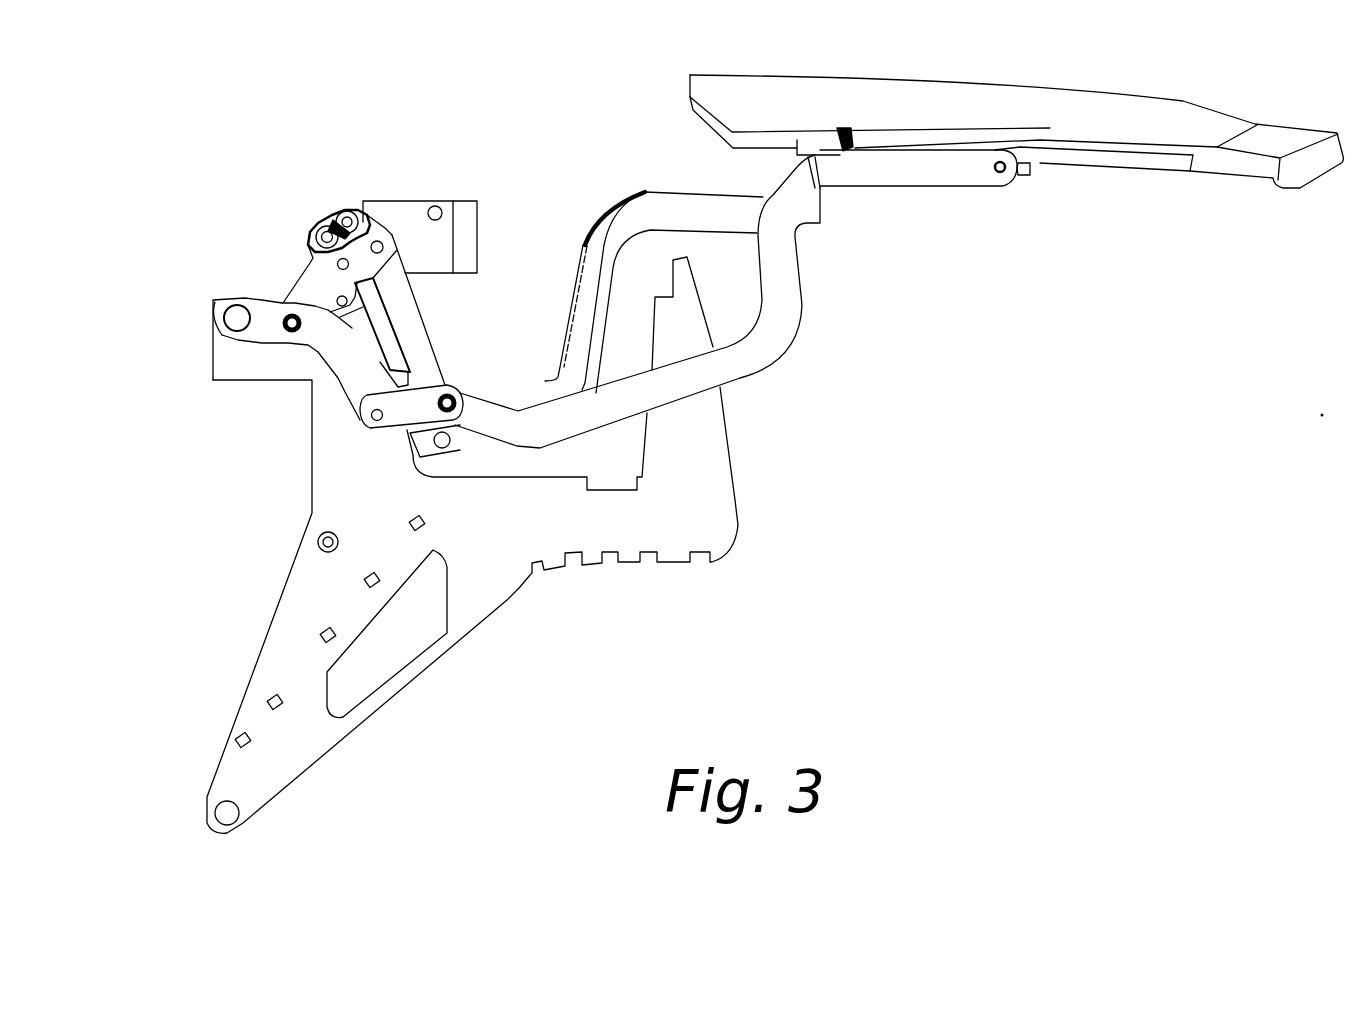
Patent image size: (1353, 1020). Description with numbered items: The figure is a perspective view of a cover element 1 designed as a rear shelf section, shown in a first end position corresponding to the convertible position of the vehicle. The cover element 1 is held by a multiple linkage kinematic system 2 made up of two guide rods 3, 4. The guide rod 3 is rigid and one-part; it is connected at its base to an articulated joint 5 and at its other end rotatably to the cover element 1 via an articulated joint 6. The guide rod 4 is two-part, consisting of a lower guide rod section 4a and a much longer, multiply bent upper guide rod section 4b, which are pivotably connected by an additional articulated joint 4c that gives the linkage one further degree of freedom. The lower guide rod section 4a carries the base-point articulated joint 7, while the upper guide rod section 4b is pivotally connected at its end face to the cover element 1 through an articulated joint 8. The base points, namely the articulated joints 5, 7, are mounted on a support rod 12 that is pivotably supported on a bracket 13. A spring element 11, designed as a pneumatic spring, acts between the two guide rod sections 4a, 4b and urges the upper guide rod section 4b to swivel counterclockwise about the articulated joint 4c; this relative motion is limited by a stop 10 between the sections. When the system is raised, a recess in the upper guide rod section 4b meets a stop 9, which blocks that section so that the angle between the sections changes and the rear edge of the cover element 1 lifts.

The cover element 1 is at (1040, 95).
The multiple linkage kinematic system 2 is at (603, 130).
The guide rod 3 is at (775, 345).
The guide rod 4 is at (586, 248).
The lower guide rod section 4a is at (297, 275).
The upper guide rod section 4b is at (634, 203).
The articulated joint 4c is at (378, 239).
The articulated joint 5 is at (456, 393).
The articulated joint 6 is at (998, 173).
The articulated joint 7 is at (286, 332).
The articulated joint 8 is at (840, 130).
The stop 9 is at (435, 206).
The stop 10 is at (335, 220).
The spring element 11 is at (360, 420).
The support rod 12 is at (338, 365).
The bracket 13 is at (477, 608).